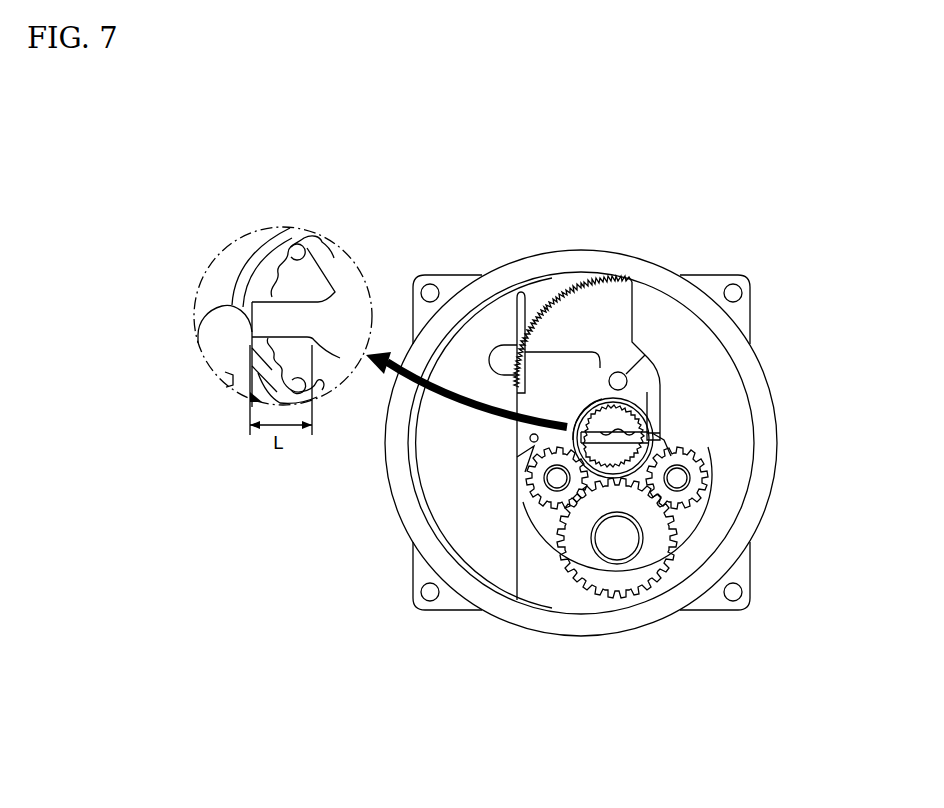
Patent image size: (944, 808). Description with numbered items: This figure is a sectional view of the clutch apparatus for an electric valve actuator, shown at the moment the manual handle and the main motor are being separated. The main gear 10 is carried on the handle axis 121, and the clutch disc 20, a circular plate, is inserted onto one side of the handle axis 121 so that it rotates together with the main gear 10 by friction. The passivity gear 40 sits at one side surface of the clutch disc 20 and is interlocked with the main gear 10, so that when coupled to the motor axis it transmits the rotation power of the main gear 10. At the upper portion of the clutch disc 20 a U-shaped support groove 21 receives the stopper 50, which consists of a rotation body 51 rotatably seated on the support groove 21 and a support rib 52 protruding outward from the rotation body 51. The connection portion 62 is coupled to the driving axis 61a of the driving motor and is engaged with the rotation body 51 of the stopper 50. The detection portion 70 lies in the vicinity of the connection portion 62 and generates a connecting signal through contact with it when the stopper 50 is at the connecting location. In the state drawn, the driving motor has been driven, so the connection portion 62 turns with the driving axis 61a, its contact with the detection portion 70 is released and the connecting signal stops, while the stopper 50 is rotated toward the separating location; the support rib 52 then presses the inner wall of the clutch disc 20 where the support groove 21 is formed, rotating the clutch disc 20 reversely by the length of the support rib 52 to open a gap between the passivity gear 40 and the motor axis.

The main gear 10 is at (657, 542).
The handle axis 121 is at (617, 552).
The clutch disc 20 is at (663, 443).
The support groove 21 is at (668, 476).
The passivity gear 40 is at (706, 482).
The stopper 50 is at (432, 305).
The rotation body 51 is at (607, 405).
The support rib 52 is at (577, 428).
The driving axis 61a is at (627, 385).
The connection portion 62 is at (617, 310).
The detection portion 70 is at (531, 442).